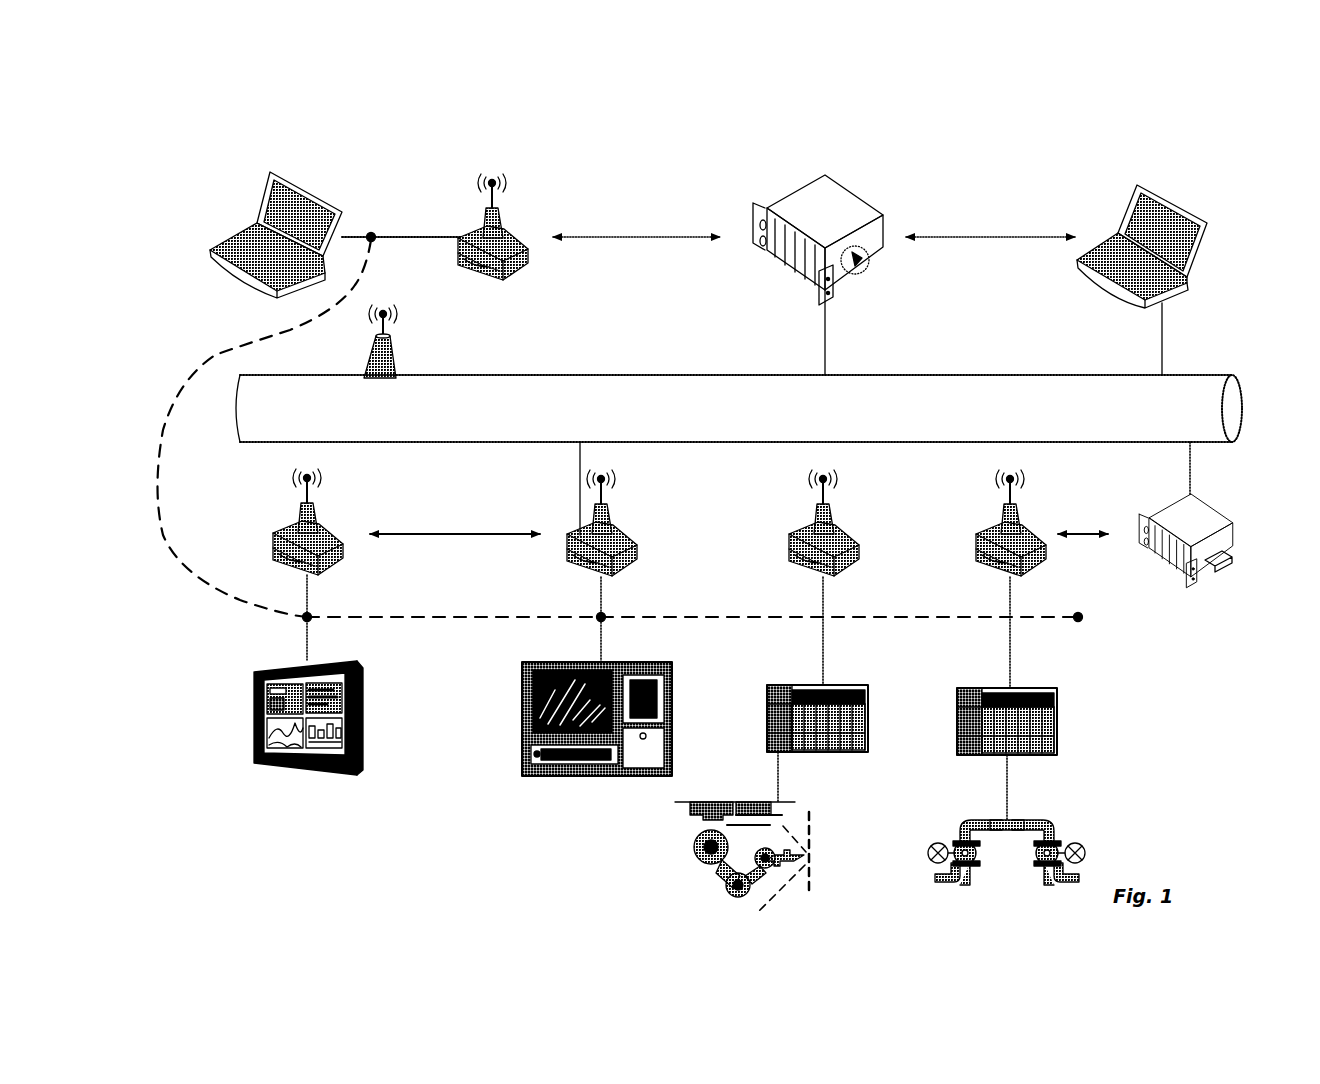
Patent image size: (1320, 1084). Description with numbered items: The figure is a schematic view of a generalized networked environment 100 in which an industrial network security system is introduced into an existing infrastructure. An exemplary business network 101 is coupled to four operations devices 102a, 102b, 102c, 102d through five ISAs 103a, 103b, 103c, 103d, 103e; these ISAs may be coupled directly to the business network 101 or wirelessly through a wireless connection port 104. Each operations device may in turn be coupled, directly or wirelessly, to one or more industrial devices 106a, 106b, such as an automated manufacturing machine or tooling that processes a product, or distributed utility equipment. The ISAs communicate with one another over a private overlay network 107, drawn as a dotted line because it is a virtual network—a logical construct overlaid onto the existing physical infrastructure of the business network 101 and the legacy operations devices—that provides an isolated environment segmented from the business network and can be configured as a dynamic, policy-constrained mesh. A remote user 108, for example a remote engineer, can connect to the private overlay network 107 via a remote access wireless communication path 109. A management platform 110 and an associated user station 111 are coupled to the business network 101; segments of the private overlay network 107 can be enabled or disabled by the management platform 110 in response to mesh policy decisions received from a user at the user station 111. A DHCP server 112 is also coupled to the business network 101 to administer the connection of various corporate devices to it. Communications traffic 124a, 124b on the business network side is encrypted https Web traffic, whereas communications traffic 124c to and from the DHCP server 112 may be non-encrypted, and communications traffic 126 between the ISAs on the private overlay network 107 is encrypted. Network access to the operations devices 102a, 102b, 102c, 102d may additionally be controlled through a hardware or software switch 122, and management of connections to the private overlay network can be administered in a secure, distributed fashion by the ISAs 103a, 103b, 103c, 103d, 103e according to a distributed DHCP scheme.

The networked environment 100 is at (1147, 116).
The business network 101 is at (944, 375).
The operations device 102a is at (258, 719).
The operations device 102b is at (525, 713).
The operations device 102c is at (871, 710).
The operations device 102d is at (1058, 702).
The ISA 103a is at (283, 533).
The ISA 103b is at (633, 546).
The ISA 103c is at (795, 535).
The ISA 103d is at (988, 535).
The ISA 103e is at (474, 188).
The wireless connection port 104 is at (398, 366).
The industrial device 106a is at (706, 802).
The industrial device 106b is at (1050, 822).
The private overlay network 107 is at (682, 616).
The remote user 108 is at (260, 208).
The remote access wireless communication path 109 is at (206, 356).
The management platform 110 is at (797, 201).
The user station 111 is at (1141, 194).
The DHCP server 112 is at (1212, 516).
The switch 122 is at (402, 236).
The communications traffic 124a is at (632, 236).
The communications traffic 124b is at (972, 235).
The communications traffic 124c is at (1086, 532).
The communications traffic 126 is at (437, 534).